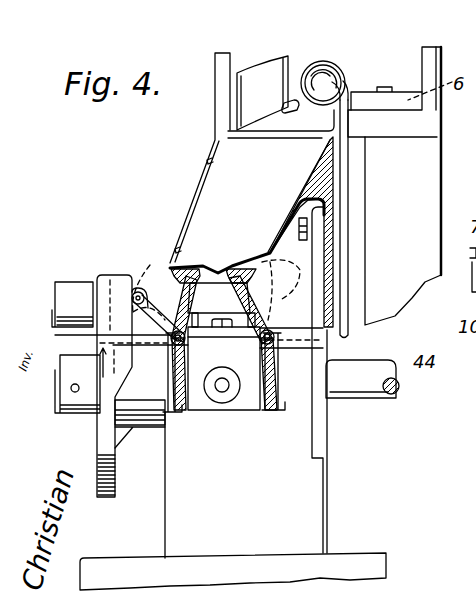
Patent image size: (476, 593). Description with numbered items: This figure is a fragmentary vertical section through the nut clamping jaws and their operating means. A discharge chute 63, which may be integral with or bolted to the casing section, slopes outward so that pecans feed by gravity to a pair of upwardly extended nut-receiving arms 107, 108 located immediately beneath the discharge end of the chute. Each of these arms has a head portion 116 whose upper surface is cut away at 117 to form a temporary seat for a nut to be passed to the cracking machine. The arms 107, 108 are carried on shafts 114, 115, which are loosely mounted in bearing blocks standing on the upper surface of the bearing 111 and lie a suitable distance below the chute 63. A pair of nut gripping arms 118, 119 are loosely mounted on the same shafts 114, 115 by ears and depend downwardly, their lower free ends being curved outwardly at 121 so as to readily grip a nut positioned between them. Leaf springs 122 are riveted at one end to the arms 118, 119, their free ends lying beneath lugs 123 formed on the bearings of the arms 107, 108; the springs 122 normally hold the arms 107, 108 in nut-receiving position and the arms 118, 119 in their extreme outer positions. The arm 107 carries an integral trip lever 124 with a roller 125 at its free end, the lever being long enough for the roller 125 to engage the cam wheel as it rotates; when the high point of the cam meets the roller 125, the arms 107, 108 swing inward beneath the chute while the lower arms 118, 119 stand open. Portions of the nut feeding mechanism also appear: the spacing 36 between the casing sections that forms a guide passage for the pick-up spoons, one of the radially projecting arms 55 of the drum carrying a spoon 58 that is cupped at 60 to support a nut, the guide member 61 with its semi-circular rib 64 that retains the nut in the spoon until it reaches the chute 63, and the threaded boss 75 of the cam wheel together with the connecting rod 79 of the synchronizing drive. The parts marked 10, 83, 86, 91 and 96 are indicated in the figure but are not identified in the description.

The base 10 is at (369, 559).
The guide passage 36 is at (349, 155).
The radially projecting arms 55 is at (345, 209).
The pick-up spoon 58 is at (346, 84).
The cupped portion 60 is at (327, 78).
The guide member 61 is at (291, 62).
The discharge chute 63 is at (207, 192).
The semi-circular rib 64 is at (297, 112).
The threaded boss 75 is at (69, 283).
The connecting rod 79 is at (463, 306).
The member 83 is at (475, 490).
The member 86 is at (475, 410).
The member 91 is at (475, 455).
The member 96 is at (475, 435).
The nut-receiving arm 107 is at (168, 265).
The nut-receiving arm 108 is at (250, 297).
The bearing 111 is at (318, 488).
The shaft 114 is at (55, 336).
The shaft 115 is at (273, 333).
The head portion 116 is at (247, 267).
The cut-away seat 117 is at (200, 267).
The nut gripping arm 118 is at (197, 368).
The nut gripping arm 119 is at (286, 390).
The outwardly curved end 121 is at (222, 404).
The leaf spring 122 is at (176, 375).
The lug 123 is at (176, 343).
The trip lever 124 is at (127, 318).
The roller 125 is at (140, 288).